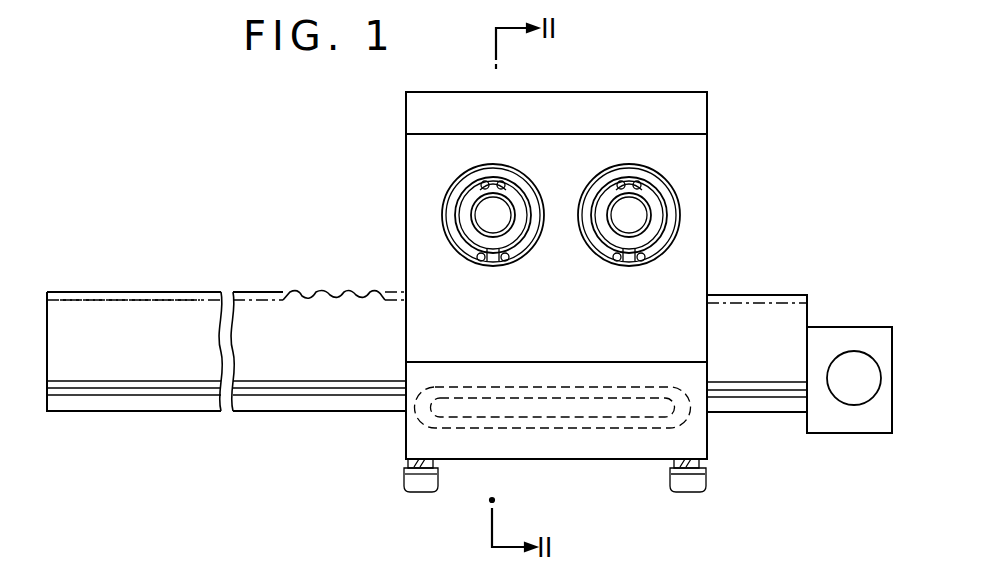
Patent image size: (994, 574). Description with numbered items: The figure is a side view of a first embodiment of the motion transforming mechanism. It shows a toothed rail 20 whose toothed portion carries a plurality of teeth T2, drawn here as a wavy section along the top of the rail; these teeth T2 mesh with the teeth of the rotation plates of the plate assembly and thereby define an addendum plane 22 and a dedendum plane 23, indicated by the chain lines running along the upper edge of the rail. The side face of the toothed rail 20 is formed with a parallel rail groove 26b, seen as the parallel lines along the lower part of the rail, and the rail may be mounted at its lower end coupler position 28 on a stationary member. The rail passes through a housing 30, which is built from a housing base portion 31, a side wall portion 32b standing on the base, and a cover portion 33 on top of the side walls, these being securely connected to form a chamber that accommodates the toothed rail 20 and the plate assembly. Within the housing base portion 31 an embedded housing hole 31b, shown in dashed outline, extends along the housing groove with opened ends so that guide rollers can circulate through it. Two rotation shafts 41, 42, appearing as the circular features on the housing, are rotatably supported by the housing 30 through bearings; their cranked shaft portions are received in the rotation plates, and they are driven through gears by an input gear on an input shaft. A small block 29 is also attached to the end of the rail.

The toothed rail 20 is at (190, 412).
The addendum plane 22 is at (72, 292).
The dedendum plane 23 is at (128, 300).
The parallel rail groove 26b is at (122, 396).
The lower end coupler position 28 is at (333, 412).
The connector block 29 is at (850, 327).
The housing 30 is at (745, 148).
The housing base portion 31 is at (707, 441).
The embedded housing hole 31b is at (578, 428).
The side wall portion 32b is at (707, 251).
The cover portion 33 is at (695, 91).
The rotation shaft 41 is at (480, 211).
The rotation shaft 42 is at (640, 215).
The teeth T2 is at (336, 294).